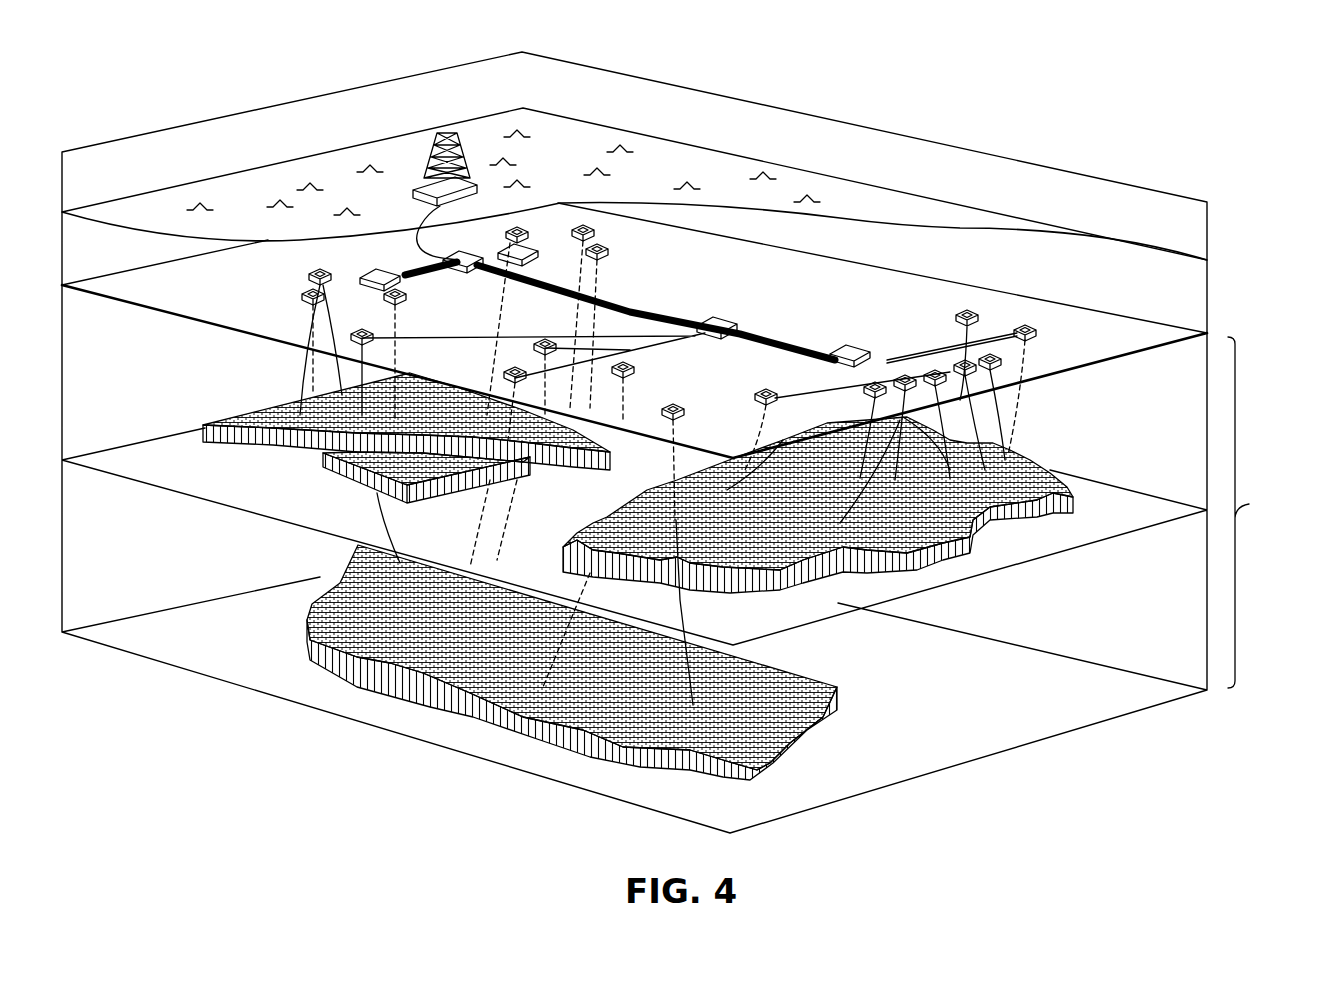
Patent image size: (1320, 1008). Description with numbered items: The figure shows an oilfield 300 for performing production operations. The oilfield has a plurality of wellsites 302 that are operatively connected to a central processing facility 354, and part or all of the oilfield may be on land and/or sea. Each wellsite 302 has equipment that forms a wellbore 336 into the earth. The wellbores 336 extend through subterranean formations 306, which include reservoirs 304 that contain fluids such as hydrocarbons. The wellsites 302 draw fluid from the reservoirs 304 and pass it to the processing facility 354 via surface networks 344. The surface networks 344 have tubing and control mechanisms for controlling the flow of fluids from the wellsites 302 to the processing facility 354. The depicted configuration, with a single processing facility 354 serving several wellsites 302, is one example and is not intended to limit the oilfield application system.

The oilfield 300 is at (105, 47).
The wellsites 302 is at (764, 376).
The reservoirs 304 is at (910, 581).
The subterranean formations 306 is at (1258, 512).
The wellbore 336 is at (996, 466).
The surface networks 344 is at (353, 303).
The central processing facility 354 is at (423, 140).